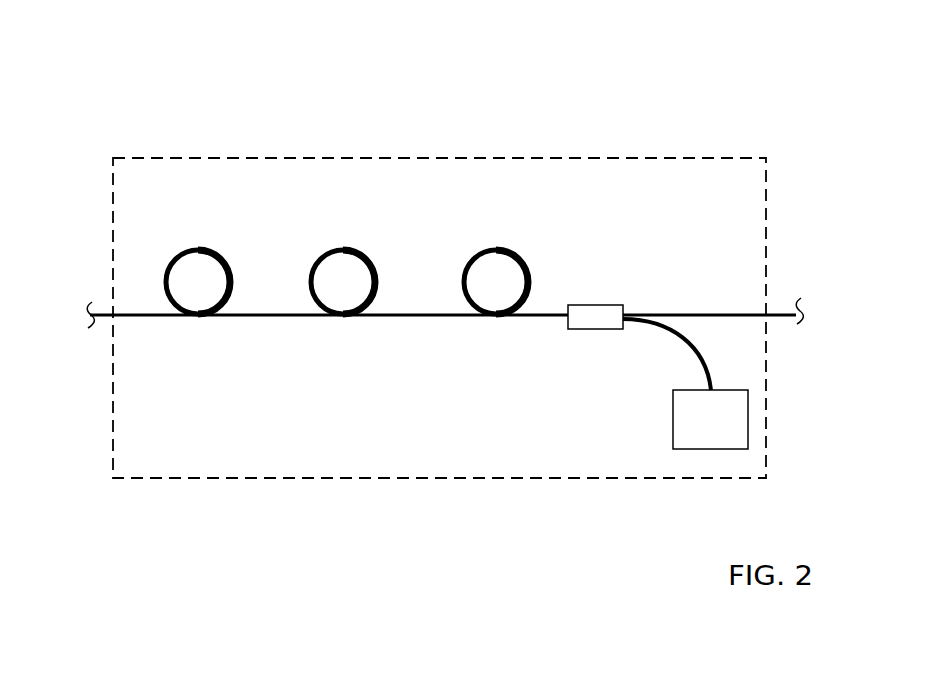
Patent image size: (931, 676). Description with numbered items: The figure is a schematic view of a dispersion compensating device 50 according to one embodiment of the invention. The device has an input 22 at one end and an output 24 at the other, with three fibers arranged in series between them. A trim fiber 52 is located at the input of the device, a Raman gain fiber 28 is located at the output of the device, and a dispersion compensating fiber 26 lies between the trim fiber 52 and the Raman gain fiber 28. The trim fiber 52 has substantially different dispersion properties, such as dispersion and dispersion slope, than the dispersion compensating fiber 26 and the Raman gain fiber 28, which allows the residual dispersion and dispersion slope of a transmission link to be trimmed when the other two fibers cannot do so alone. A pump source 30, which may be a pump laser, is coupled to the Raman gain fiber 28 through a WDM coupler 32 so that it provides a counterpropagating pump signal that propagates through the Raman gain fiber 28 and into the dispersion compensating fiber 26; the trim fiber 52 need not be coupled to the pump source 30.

The dispersion compensating device 50 is at (223, 158).
The trim fiber 52 is at (198, 248).
The dispersion compensating fiber 26 is at (344, 249).
The Raman gain fiber 28 is at (496, 249).
The WDM coupler 32 is at (582, 330).
The pump source 30 is at (724, 434).
The input 22 is at (101, 339).
The output 24 is at (779, 337).